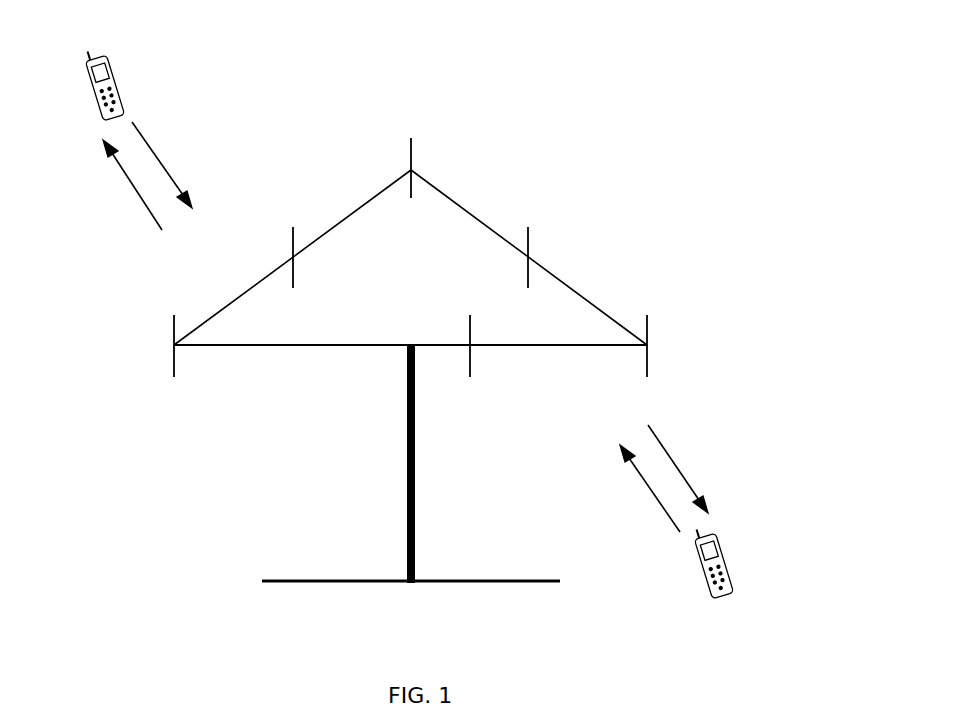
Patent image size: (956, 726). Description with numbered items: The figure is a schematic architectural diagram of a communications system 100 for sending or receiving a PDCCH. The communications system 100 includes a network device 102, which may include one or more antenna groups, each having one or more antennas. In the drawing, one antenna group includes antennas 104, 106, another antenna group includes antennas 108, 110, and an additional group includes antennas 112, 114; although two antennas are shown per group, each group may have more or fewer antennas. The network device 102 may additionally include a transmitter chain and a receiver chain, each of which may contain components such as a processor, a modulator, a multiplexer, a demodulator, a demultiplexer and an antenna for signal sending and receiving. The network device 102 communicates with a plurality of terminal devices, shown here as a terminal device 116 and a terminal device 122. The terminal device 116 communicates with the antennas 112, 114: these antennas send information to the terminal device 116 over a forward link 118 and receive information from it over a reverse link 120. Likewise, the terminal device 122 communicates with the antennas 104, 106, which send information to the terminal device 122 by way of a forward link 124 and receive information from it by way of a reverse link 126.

The communications system 100 is at (628, 113).
The network device 102 is at (415, 518).
The antenna 104 is at (175, 363).
The antenna 106 is at (294, 276).
The antenna 108 is at (412, 155).
The antenna 110 is at (529, 242).
The antenna 112 is at (648, 335).
The antenna 114 is at (471, 363).
The terminal device 116 is at (733, 572).
The forward link 118 is at (678, 462).
The reverse link 120 is at (658, 500).
The terminal device 122 is at (125, 86).
The forward link 124 is at (140, 200).
The reverse link 126 is at (160, 160).